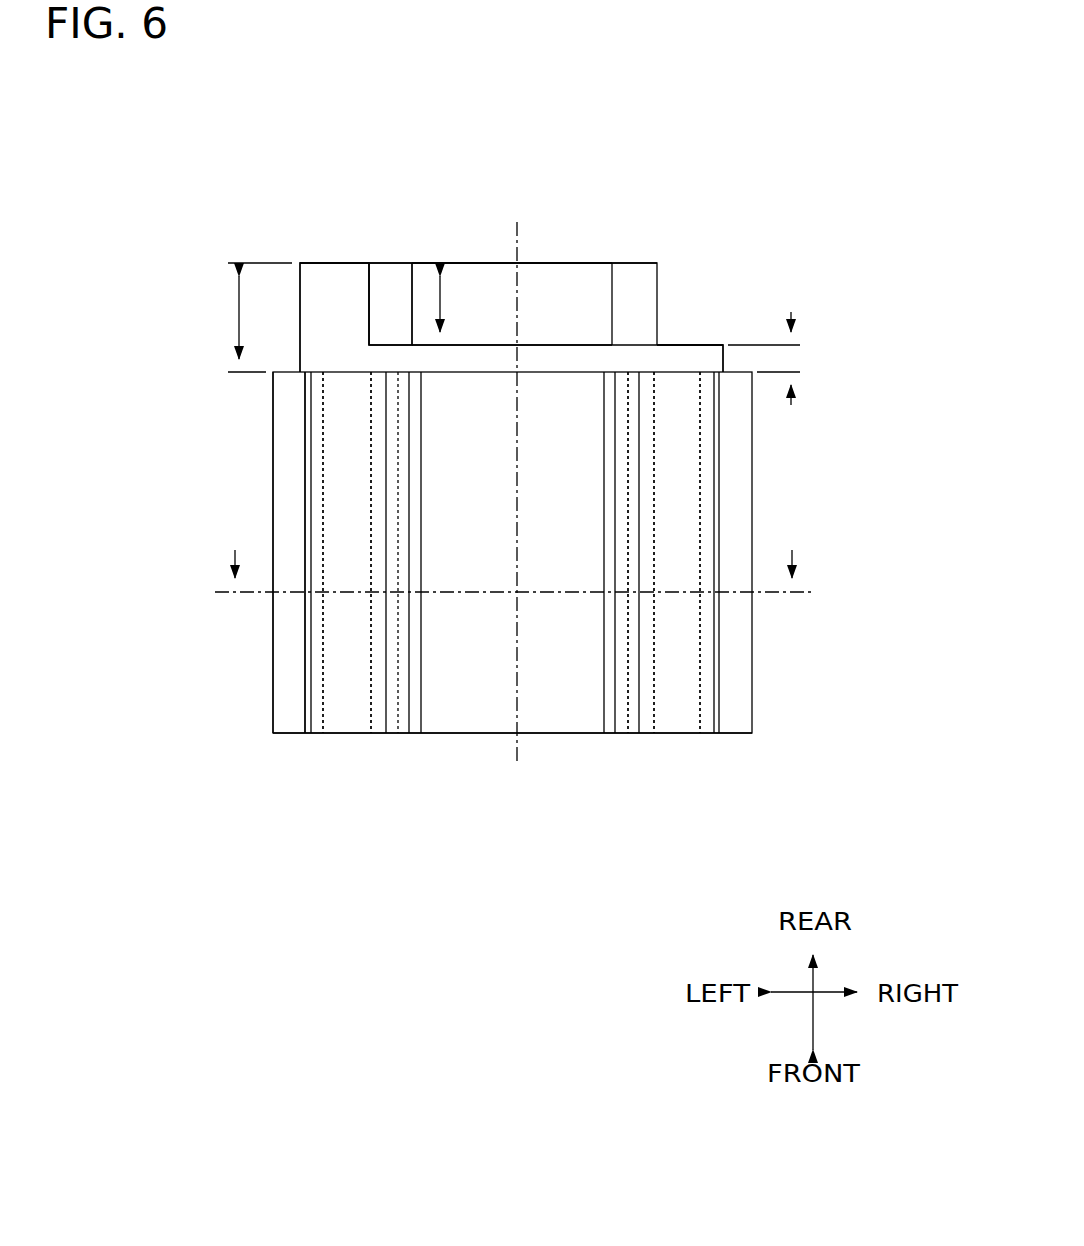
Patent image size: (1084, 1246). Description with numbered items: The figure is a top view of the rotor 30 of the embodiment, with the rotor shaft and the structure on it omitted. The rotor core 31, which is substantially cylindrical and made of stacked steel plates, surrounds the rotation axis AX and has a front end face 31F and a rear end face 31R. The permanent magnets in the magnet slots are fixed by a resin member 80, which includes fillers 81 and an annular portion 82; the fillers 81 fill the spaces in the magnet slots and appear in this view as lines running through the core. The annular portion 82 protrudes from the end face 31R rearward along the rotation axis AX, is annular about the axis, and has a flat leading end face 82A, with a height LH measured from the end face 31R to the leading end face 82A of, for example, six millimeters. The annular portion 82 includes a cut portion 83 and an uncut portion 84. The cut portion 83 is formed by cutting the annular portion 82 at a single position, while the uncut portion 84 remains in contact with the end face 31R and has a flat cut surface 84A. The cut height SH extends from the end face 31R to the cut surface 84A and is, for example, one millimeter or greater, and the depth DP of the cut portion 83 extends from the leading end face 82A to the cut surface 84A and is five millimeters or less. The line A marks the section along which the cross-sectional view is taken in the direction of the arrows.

The rotor 30 is at (766, 232).
The rotor core 31 is at (273, 490).
The rear end face 31R is at (313, 375).
The front end face 31F is at (285, 734).
The resin member 80 is at (647, 256).
The fillers 81 is at (675, 722).
The annular portion 82 is at (333, 277).
The leading end face 82A is at (355, 263).
The cut portion 83 is at (559, 284).
The uncut portion 84 is at (667, 350).
The cut surface 84A is at (700, 345).
The rotation axis AX is at (517, 237).
The depth DP is at (441, 293).
The height LH is at (247, 317).
The cut height SH is at (784, 358).
The line A- A is at (514, 558).